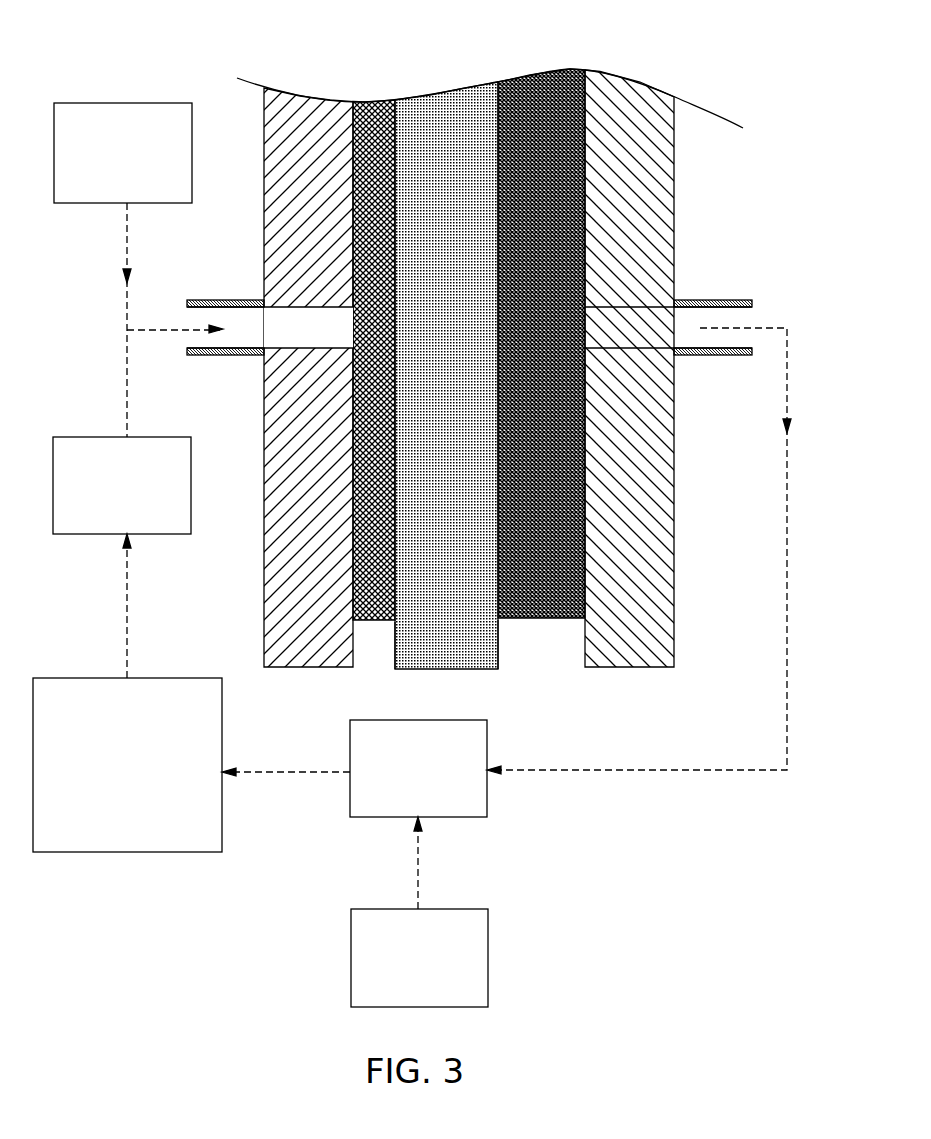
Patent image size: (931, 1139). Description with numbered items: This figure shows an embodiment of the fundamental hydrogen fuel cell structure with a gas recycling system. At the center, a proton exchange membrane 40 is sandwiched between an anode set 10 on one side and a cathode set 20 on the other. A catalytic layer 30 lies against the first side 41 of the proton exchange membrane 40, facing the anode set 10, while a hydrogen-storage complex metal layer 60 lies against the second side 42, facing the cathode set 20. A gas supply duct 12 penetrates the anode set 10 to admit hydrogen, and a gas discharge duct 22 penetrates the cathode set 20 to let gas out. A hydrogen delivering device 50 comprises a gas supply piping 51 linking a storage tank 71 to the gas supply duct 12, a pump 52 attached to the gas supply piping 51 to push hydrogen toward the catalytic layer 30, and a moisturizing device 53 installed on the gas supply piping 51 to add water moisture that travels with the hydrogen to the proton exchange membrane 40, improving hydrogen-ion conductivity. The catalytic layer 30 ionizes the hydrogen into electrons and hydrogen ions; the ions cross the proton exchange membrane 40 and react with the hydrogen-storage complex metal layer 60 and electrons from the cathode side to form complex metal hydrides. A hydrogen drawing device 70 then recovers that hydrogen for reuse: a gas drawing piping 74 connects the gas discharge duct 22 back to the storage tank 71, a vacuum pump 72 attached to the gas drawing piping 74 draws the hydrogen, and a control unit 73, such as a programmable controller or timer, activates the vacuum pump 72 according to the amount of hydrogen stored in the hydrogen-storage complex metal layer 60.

The anode set 10 is at (264, 410).
The gas supply duct 12 is at (257, 318).
The cathode set 20 is at (674, 518).
The gas discharge duct 22 is at (657, 318).
The catalytic layer 30 is at (378, 101).
The proton exchange membrane 40 is at (450, 99).
The first side 41 is at (393, 641).
The second side 42 is at (498, 639).
The hydrogen delivering device 50 is at (133, 390).
The gas supply piping 51 is at (127, 372).
The pump 52 is at (122, 485).
The moisturizing device 53 is at (123, 153).
The hydrogen-storage complex metal layer 60 is at (543, 69).
The hydrogen drawing device 70 is at (412, 667).
The storage tank 71 is at (127, 765).
The vacuum pump 72 is at (418, 768).
The control unit 73 is at (419, 958).
The gas drawing piping 74 is at (667, 773).